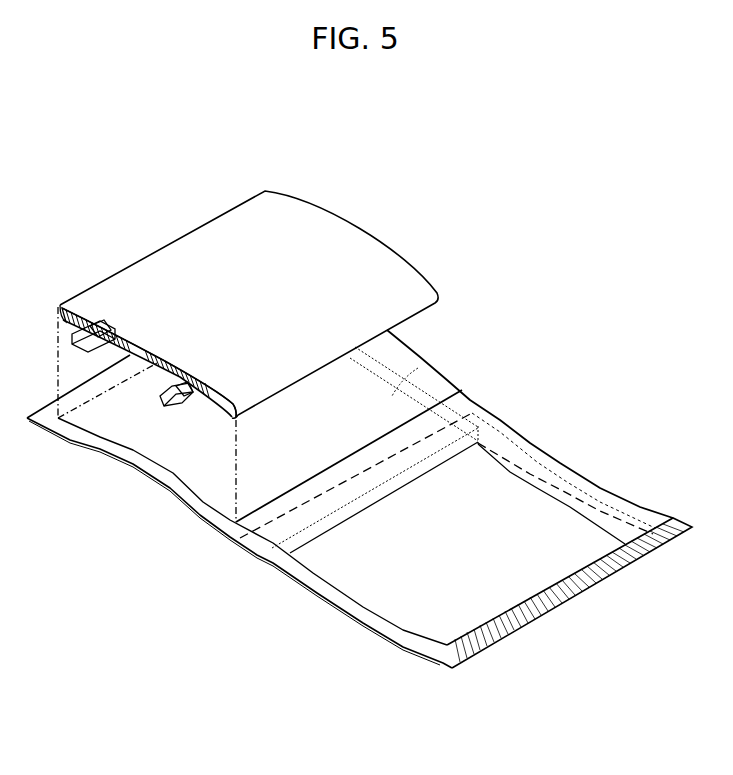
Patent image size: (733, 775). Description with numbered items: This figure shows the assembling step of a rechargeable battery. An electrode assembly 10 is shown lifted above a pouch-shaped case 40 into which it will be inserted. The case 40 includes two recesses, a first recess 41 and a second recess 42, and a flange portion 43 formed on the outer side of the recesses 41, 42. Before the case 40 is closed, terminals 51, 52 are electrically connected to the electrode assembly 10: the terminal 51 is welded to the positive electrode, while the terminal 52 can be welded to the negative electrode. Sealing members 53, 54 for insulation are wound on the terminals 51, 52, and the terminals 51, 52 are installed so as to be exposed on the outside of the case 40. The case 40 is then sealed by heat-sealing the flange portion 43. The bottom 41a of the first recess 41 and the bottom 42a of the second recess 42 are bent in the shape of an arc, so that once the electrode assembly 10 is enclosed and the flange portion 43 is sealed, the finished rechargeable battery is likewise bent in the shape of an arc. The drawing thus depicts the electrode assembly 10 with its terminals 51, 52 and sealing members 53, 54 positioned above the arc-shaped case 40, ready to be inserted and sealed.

The electrode assembly 10 is at (148, 248).
The case 40 is at (496, 385).
The first recess 41 is at (427, 370).
The bottom of the first recess 41a is at (394, 397).
The second recess 42 is at (528, 465).
The bottom of the second recess 42a is at (547, 510).
The flange portion 43 is at (203, 515).
The terminal 51 is at (73, 340).
The terminal 52 is at (163, 400).
The sealing member 53 is at (80, 330).
The sealing member 54 is at (185, 406).